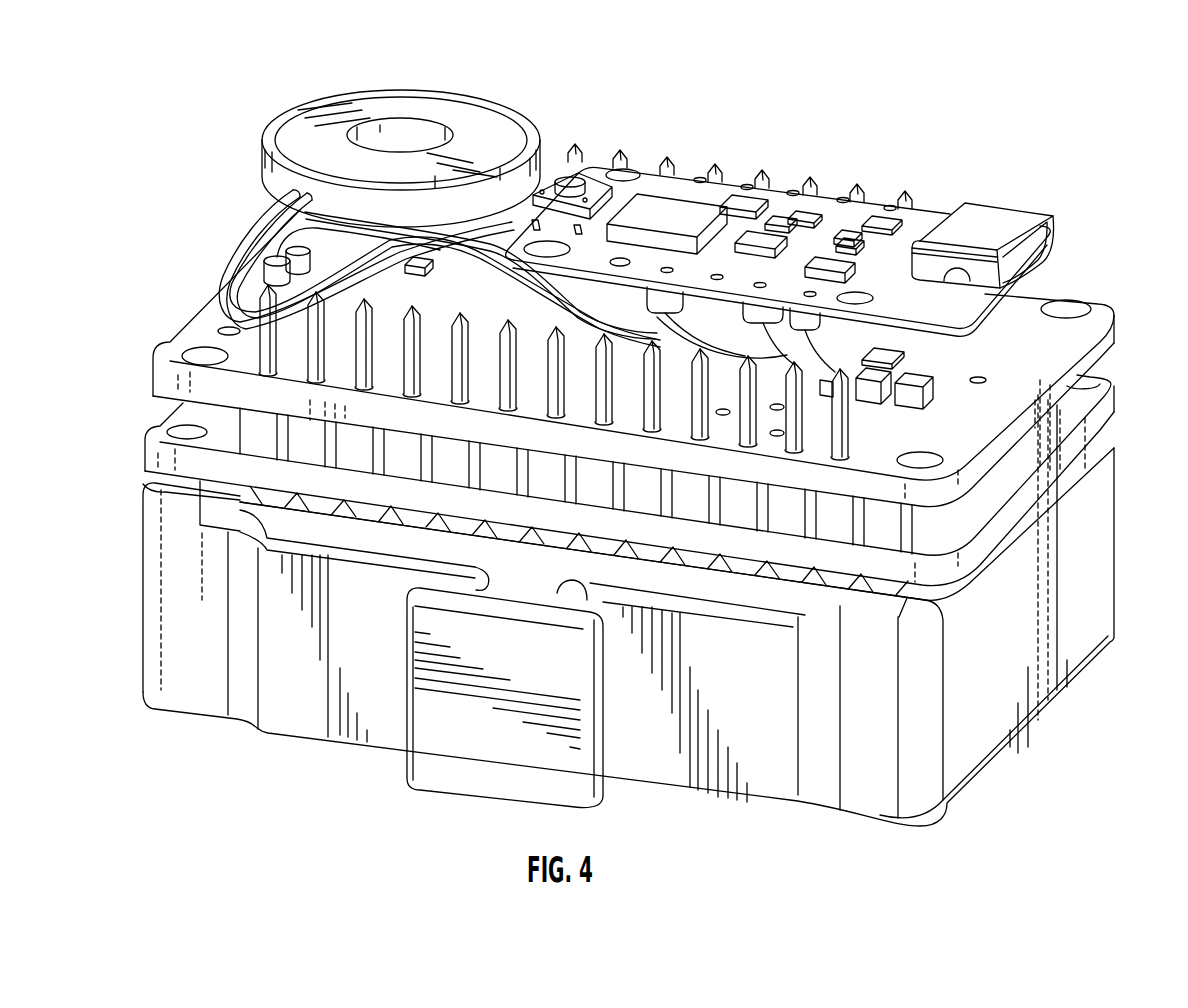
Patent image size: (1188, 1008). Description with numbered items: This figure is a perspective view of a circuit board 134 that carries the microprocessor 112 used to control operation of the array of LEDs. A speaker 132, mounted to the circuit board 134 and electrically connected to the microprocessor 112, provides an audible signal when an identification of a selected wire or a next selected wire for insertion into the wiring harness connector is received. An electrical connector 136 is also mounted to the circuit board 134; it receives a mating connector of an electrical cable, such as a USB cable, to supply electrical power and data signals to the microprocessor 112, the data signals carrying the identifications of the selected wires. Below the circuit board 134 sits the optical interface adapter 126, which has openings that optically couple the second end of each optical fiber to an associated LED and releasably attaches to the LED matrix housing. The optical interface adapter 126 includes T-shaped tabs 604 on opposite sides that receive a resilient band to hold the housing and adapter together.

The microprocessor 112 is at (693, 200).
The optical interface adapter 126 is at (1114, 507).
The speaker 132 is at (402, 100).
The circuit board 134 is at (835, 188).
The electrical connector 136 is at (997, 195).
The tabs 604 is at (480, 781).